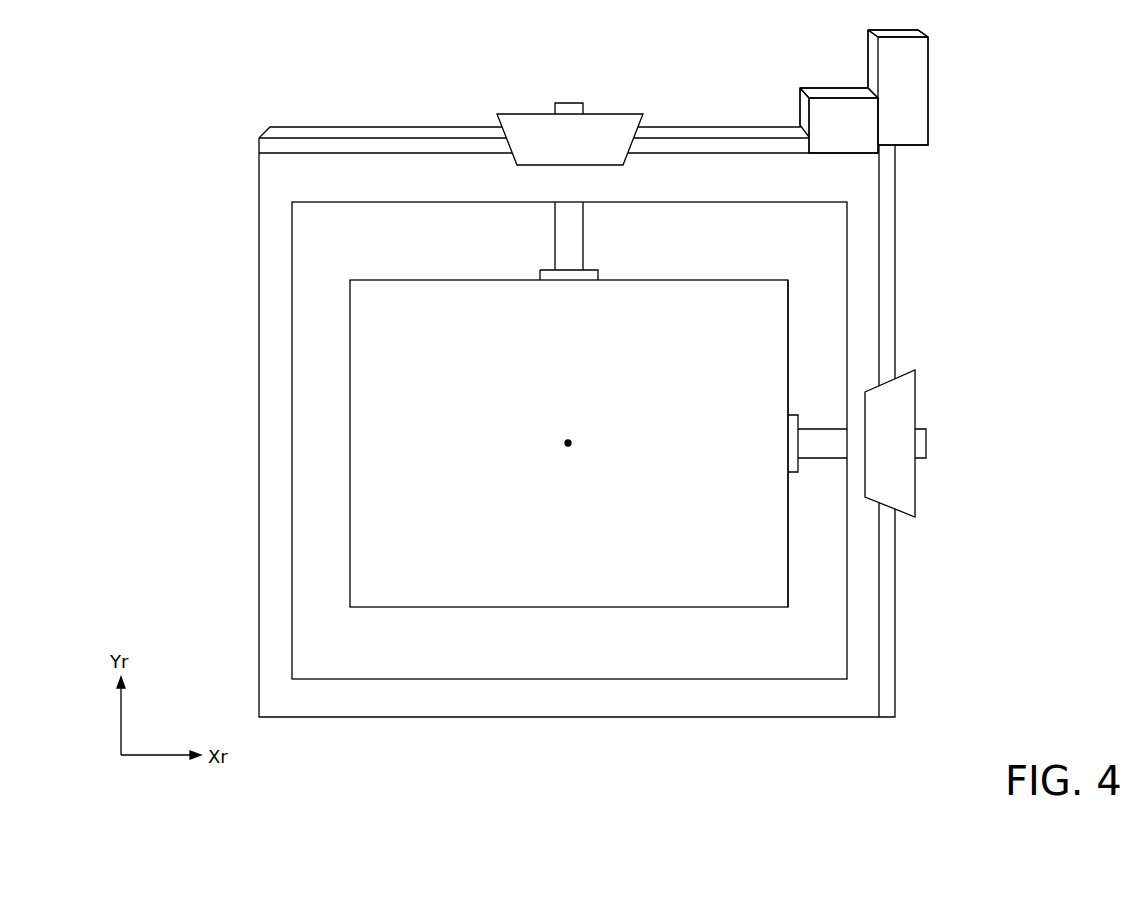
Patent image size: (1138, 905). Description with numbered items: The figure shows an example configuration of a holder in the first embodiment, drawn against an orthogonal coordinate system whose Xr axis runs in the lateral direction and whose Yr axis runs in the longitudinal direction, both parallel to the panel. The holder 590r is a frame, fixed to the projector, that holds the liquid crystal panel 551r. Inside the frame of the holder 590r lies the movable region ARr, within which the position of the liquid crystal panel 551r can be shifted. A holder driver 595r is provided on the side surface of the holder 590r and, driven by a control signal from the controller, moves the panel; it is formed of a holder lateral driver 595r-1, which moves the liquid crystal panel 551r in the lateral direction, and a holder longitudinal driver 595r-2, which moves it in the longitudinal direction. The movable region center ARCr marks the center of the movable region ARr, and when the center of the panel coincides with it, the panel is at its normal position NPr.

The holder 590r is at (274, 235).
The movable region ARr is at (848, 238).
The liquid crystal panel 551r is at (565, 607).
The movable region center ARCr is at (572, 440).
The normal position NPr is at (788, 557).
The holder driver 595r is at (952, 104).
The holder lateral driver 595r-1 is at (838, 131).
The holder longitudinal driver 595r-2 is at (900, 80).